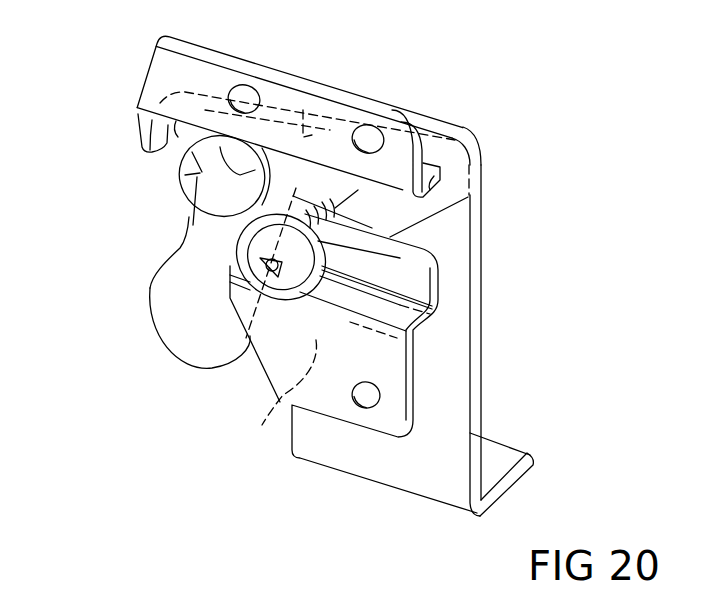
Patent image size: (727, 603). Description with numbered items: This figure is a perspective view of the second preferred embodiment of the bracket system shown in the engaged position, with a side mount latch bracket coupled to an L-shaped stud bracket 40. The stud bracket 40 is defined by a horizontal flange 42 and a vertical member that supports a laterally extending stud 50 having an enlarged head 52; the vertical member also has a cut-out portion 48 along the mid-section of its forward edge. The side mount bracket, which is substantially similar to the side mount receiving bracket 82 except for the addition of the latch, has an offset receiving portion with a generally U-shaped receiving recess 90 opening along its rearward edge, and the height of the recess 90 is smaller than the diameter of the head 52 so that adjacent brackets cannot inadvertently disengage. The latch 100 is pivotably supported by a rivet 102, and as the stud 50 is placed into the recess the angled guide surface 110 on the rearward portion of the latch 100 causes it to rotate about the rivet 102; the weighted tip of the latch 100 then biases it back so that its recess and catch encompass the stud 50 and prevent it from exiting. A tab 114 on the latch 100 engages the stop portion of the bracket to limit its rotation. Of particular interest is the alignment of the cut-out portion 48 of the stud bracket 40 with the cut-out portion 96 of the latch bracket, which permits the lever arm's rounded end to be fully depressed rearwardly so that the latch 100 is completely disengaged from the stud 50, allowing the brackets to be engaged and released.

The L-shaped stud bracket 40 is at (452, 367).
The horizontal flange 42 is at (528, 452).
The cut-out portion 48 is at (270, 420).
The stud 50 is at (440, 243).
The enlarged head 52 is at (240, 246).
The side mount receiving bracket 82 is at (112, 80).
The receiving recess 90 is at (308, 178).
The cut-out portion 96 is at (268, 378).
The latch 100 is at (193, 247).
The rivet 102 is at (187, 178).
The angled guide surface 110 is at (448, 214).
The tab 114 is at (141, 142).